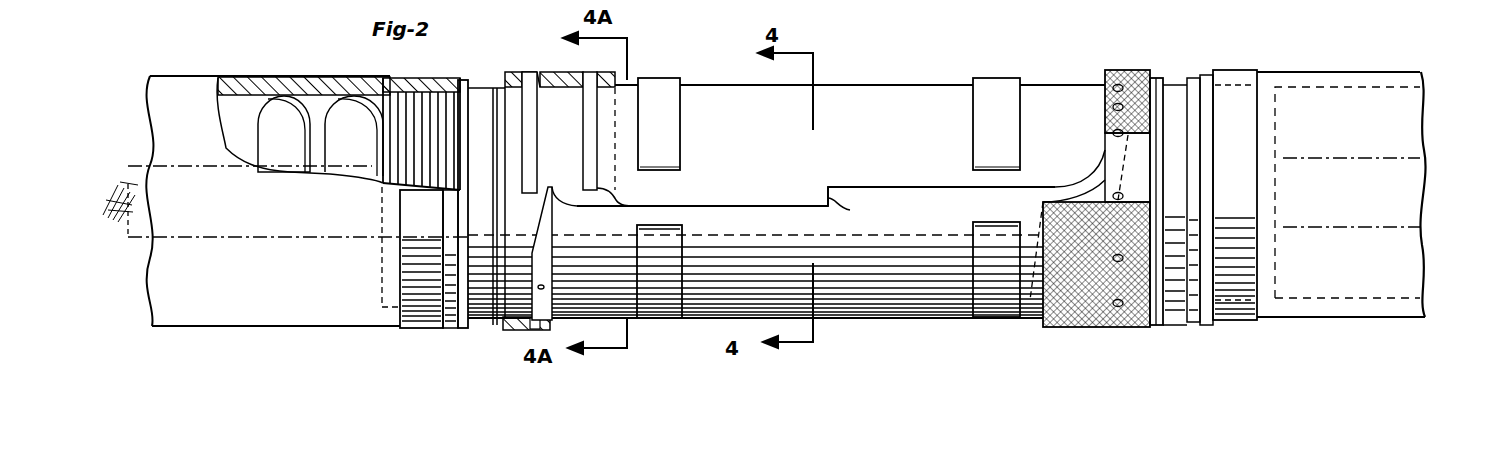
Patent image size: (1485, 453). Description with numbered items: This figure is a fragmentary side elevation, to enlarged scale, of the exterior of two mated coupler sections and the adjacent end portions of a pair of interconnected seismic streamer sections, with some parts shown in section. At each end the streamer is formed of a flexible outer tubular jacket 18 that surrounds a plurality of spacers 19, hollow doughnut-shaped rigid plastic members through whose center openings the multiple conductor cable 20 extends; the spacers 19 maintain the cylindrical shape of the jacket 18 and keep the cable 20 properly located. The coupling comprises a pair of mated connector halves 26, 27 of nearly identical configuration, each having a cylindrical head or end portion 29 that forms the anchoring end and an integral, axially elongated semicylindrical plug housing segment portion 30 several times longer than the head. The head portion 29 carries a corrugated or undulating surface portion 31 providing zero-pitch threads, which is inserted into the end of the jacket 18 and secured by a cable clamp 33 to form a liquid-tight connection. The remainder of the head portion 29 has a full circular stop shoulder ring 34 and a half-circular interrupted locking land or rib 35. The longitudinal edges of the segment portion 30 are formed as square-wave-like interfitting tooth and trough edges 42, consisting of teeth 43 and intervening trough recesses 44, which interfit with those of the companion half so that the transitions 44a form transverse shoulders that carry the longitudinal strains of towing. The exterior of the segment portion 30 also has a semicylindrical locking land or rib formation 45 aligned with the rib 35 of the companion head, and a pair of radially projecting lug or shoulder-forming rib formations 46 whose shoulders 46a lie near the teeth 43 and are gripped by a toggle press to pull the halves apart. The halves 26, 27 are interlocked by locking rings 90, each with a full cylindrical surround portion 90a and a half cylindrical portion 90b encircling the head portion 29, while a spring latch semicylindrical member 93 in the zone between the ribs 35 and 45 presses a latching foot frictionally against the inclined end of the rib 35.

The outer tubular jacket 18 is at (247, 75).
The spacers 19 is at (338, 155).
The multiple conductor cable 20 is at (143, 237).
The connector half 26 is at (897, 88).
The connector half 27 is at (915, 318).
The cylindrical head or end portion 29 is at (480, 88).
The semicylindrical plug housing segment portion 30 is at (724, 84).
The corrugated or undulating surface portion 31 is at (388, 76).
The cable clamp 33 is at (415, 328).
The full circular stop shoulder ring 34 is at (470, 328).
The interrupted locking land or rib 35 is at (521, 186).
The interfitting tooth and trough edges 42 is at (804, 197).
The teeth 43 is at (887, 186).
The trough recesses 44 is at (733, 206).
The transitions 44a is at (848, 208).
The semicylindrical locking land or rib formation 45 is at (605, 180).
The lug or shoulder-forming rib formations 46 is at (672, 120).
The shoulders 46a is at (672, 170).
The locking rings 90 is at (565, 76).
The full cylindrical surround portion 90a is at (530, 330).
The half cylindrical portion 90b is at (1058, 198).
The spring latch semicylindrical member 93 is at (545, 247).